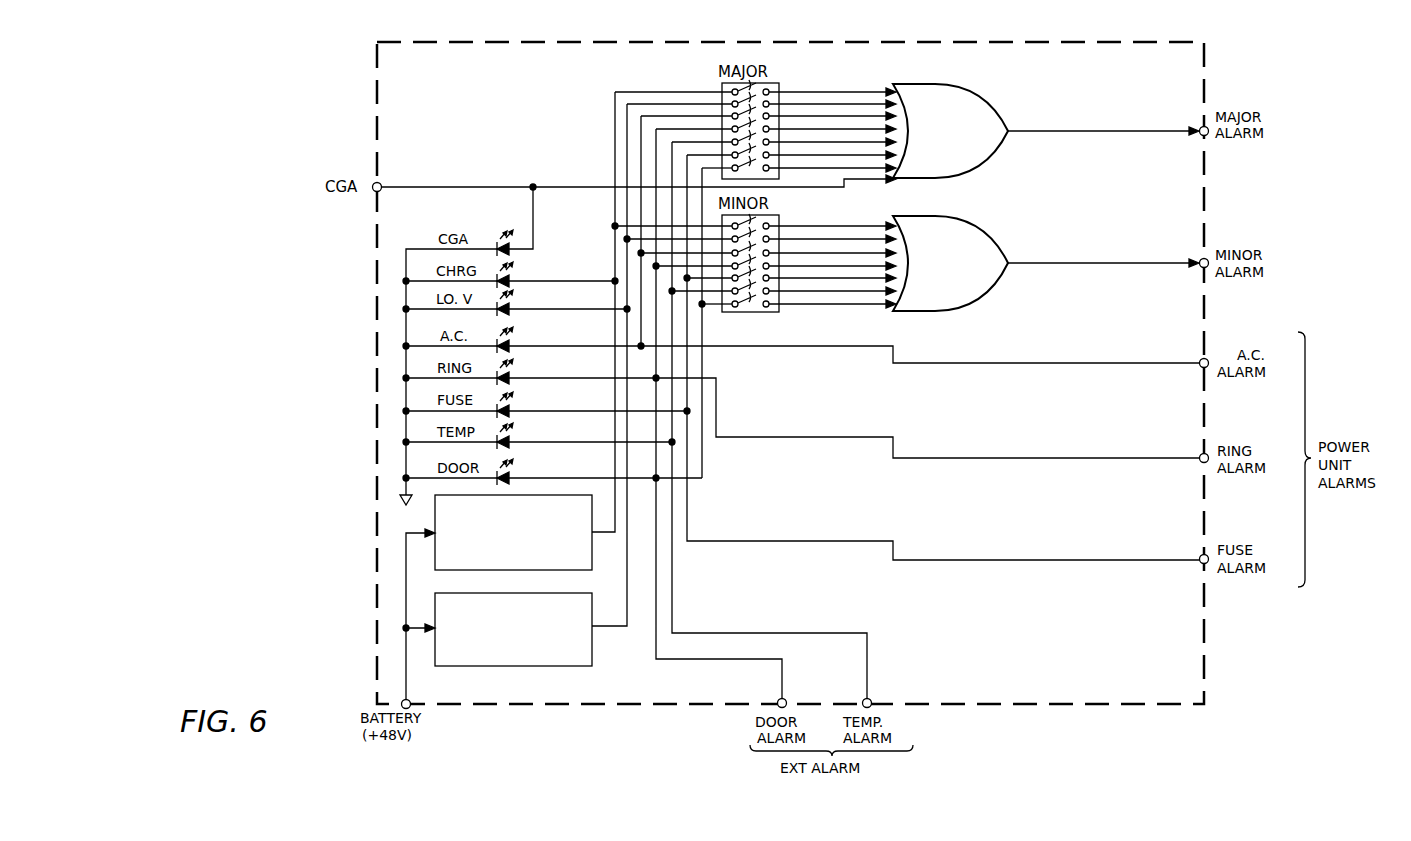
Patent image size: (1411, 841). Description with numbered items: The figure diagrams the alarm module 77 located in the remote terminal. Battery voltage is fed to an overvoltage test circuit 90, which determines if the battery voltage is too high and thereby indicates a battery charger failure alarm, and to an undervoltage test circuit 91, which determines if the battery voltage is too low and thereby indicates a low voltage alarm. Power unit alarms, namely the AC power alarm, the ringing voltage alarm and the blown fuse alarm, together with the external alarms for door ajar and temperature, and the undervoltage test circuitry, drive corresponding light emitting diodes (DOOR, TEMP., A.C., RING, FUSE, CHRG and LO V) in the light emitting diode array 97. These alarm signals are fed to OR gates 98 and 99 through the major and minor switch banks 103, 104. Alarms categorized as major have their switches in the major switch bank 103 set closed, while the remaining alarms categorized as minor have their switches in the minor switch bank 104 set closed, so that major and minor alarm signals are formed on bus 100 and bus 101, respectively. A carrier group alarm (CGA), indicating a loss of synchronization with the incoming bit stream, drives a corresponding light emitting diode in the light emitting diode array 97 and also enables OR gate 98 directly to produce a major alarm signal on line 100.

The alarm module 77 is at (1090, 42).
The overvoltage test circuit 90 is at (578, 570).
The undervoltage test circuit 91 is at (575, 666).
The light emitting diode array 97 is at (536, 224).
The OR gate 98 is at (958, 140).
The OR gate 99 is at (958, 272).
The bus 100 is at (1133, 131).
The bus 101 is at (1133, 263).
The major switch bank 103 is at (779, 83).
The minor switch bank 104 is at (779, 215).